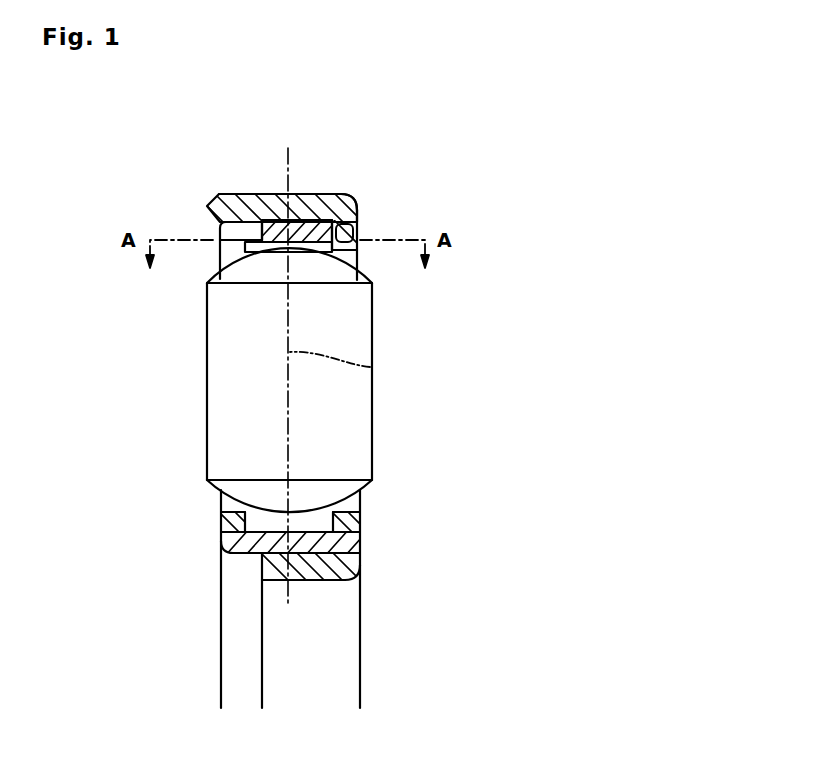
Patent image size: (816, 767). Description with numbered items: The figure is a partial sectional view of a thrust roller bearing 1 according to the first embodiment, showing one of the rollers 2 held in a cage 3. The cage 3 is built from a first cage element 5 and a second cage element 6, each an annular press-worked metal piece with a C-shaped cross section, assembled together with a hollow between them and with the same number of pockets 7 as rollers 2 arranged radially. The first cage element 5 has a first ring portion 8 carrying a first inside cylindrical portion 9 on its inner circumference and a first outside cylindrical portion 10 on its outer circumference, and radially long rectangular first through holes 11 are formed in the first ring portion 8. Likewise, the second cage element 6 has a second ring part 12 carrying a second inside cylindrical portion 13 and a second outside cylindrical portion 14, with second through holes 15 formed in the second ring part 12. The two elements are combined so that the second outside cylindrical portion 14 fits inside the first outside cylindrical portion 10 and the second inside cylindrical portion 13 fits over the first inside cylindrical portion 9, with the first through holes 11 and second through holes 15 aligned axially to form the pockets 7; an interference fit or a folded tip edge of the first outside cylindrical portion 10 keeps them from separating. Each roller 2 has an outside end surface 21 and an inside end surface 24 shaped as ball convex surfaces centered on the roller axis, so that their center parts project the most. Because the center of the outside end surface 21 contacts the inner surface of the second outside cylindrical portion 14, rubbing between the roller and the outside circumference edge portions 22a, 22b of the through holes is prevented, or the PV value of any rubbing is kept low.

The thrust roller bearing 1 is at (388, 322).
The rollers 2 is at (352, 417).
The cage 3 is at (318, 192).
The first cage element 5 is at (358, 225).
The second cage element 6 is at (223, 538).
The pockets 7 is at (362, 503).
The first ring portion 8 is at (345, 540).
The first inside cylindrical portion 9 is at (303, 580).
The first outside cylindrical portion 10 is at (237, 204).
The first through holes 11 is at (358, 258).
The second ring part 12 is at (227, 525).
The second inside cylindrical portion 13 is at (265, 573).
The second outside cylindrical portion 14 is at (298, 207).
The second through holes 15 is at (222, 502).
The outside end surfaces 21 is at (220, 256).
The outside circumference edge portion 22a is at (343, 197).
The outside circumference edge portion 22b is at (218, 224).
The inside end surfaces 24 is at (360, 573).